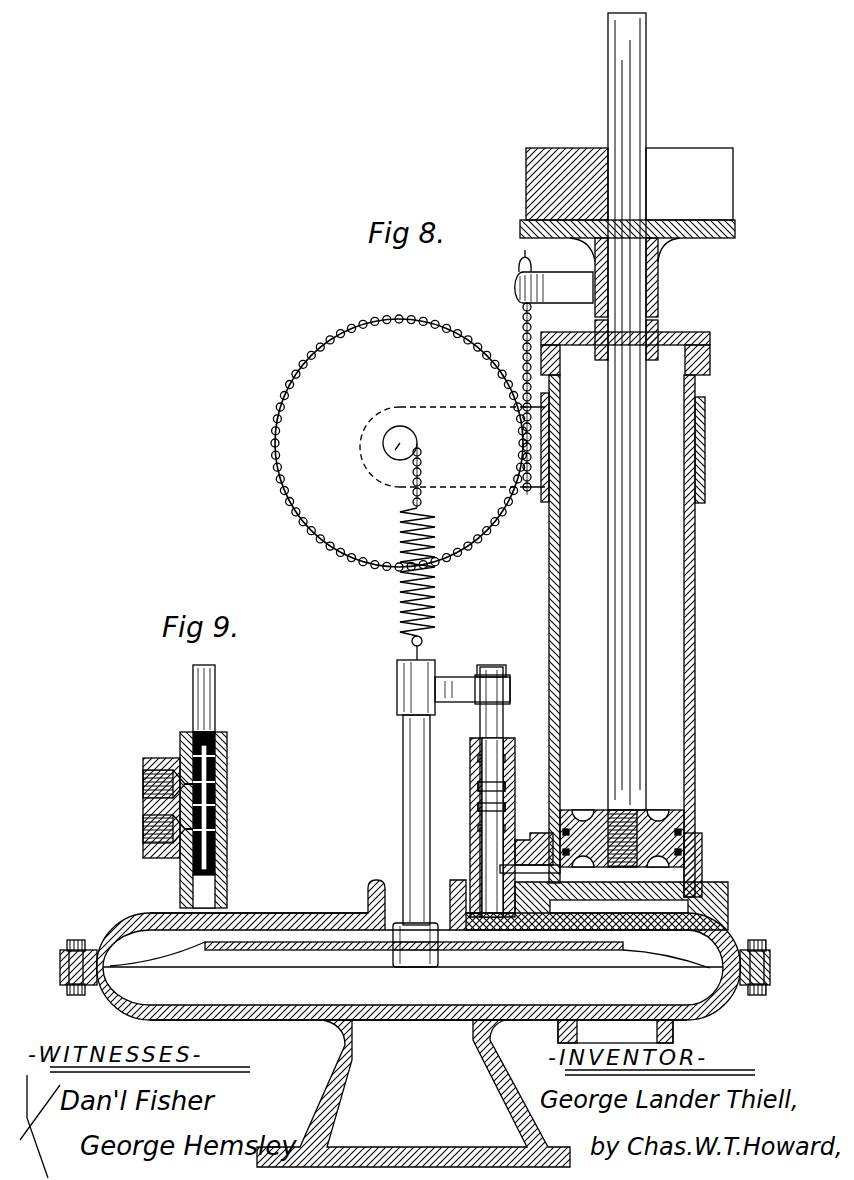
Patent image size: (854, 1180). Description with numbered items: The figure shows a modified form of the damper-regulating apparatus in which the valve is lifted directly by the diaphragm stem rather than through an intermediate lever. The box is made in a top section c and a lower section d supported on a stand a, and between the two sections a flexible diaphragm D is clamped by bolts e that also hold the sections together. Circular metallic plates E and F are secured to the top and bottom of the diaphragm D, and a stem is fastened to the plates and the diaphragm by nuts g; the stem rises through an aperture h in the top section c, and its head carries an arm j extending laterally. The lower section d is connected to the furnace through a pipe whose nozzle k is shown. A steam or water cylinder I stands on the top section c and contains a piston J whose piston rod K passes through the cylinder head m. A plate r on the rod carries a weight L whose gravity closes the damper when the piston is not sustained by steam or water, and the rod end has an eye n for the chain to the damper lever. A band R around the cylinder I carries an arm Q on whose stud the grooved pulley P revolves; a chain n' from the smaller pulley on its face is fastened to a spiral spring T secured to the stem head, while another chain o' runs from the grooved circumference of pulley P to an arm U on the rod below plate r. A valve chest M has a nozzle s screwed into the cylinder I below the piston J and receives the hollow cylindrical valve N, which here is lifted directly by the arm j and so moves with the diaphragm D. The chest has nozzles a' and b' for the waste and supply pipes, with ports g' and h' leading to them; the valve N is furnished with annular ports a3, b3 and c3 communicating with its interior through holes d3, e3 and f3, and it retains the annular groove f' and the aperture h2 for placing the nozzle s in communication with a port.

In FIG. 8, the weight L is at (629, 254).
In FIG. 8, the plate r is at (696, 240).
In FIG. 8, the steam or water cylinder I is at (608, 411).
In FIG. 8, the cylinder head m is at (700, 330).
In FIG. 8, the piston rod K is at (608, 504).
In FIG. 8, the band R is at (708, 450).
In FIG. 8, the arm Q is at (393, 780).
In FIG. 8, the piston J is at (567, 812).
In FIG. 8, the nozzle s is at (521, 845).
In FIG. 8, the valve chest M is at (515, 786).
In FIG. 9, the valve chest M is at (227, 803).
In FIG. 8, the hollow cylindrical valve N is at (505, 731).
In FIG. 9, the hollow cylindrical valve N is at (217, 725).
In FIG. 8, the arm j is at (472, 689).
In FIG. 8, the spiral spring T is at (433, 580).
In FIG. 8, the grooved pulley P is at (399, 443).
In FIG. 8, the eye n is at (393, 467).
In FIG. 8, the chain n' is at (443, 447).
In FIG. 8, the chain o' is at (510, 399).
In FIG. 8, the arm U is at (562, 292).
In FIG. 8, the circular metallic plate E is at (356, 908).
In FIG. 8, the aperture h is at (417, 903).
In FIG. 8, the top section of box c is at (310, 914).
In FIG. 8, the nuts g is at (440, 920).
In FIG. 9, the nuts g is at (143, 798).
In FIG. 8, the flexible diaphragm D is at (675, 953).
In FIG. 8, the circular metallic plate F is at (325, 953).
In FIG. 8, the bolts e is at (80, 988).
In FIG. 8, the lower section of box d is at (279, 1024).
In FIG. 8, the stand a is at (413, 1093).
In FIG. 8, the nozzle k is at (615, 1032).
In FIG. 9, the hole d3 is at (185, 736).
In FIG. 9, the nozzle a' is at (151, 794).
In FIG. 9, the annular port a3 is at (228, 752).
In FIG. 9, the hole e3 is at (143, 782).
In FIG. 9, the annular port b3 is at (228, 786).
In FIG. 9, the annular port c3 is at (229, 815).
In FIG. 9, the port h' is at (142, 834).
In FIG. 9, the annular groove f' is at (226, 859).
In FIG. 9, the hole f3 is at (140, 850).
In FIG. 9, the nozzle b' is at (144, 867).
In FIG. 9, the aperture h2 is at (187, 868).